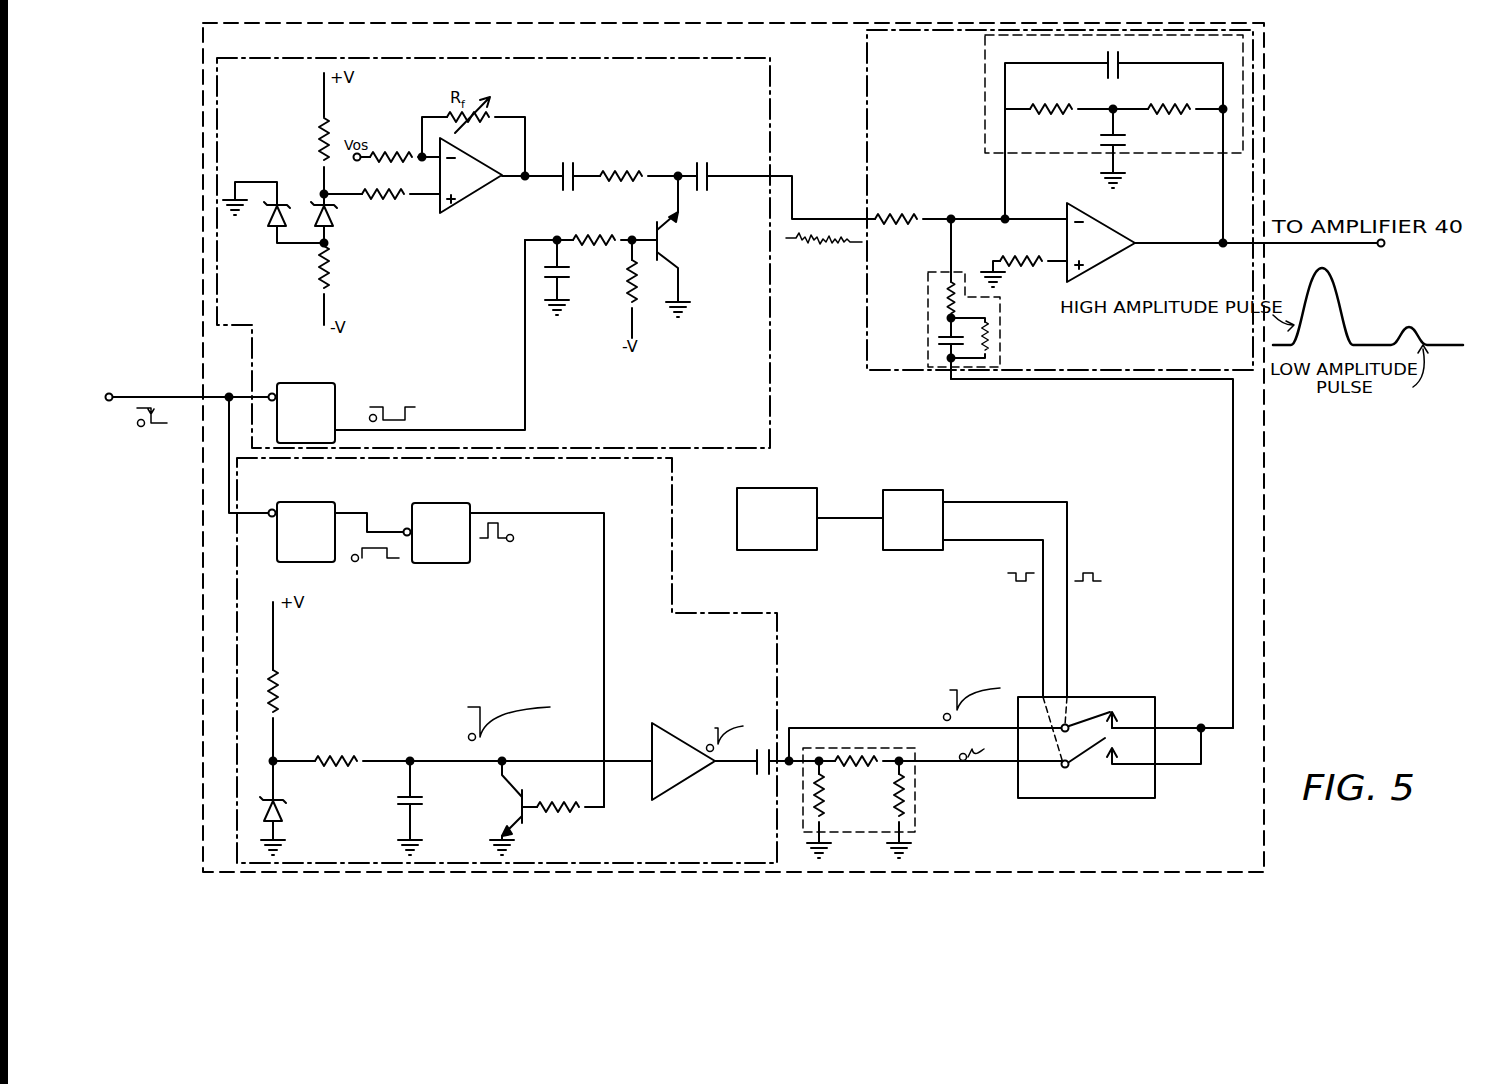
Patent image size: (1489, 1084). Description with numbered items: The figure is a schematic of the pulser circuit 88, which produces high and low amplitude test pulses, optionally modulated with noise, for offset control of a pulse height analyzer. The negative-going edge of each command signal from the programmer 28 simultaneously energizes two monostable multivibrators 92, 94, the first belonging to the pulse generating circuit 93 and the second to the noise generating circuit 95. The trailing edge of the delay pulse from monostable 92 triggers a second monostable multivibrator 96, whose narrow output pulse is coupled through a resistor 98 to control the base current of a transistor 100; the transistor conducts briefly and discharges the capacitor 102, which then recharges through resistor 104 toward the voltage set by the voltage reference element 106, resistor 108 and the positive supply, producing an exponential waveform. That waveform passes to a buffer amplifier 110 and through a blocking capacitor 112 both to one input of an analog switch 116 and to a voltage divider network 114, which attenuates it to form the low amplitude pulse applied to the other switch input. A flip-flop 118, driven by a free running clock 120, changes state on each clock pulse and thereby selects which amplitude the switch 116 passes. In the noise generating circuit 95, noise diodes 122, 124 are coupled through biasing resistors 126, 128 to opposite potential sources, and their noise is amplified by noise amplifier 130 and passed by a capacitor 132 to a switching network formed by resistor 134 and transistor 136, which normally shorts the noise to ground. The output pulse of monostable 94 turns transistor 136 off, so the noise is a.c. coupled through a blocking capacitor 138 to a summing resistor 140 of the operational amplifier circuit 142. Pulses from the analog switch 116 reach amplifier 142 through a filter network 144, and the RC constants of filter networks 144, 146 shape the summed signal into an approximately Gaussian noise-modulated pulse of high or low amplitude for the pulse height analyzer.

The pulser circuit 88 is at (203, 140).
The noise generating circuit 95 is at (771, 409).
The pulse generating circuit 93 is at (674, 599).
The programmer 28 is at (181, 377).
The monostable multivibrator 94 is at (324, 383).
The monostable multivibrator 92 is at (314, 502).
The second monostable multivibrator 96 is at (433, 503).
The biasing resistor 128 is at (318, 144).
The noise diode 124 is at (335, 218).
The biasing resistor 126 is at (332, 270).
The noise diode 122 is at (265, 223).
The noise amplifier 130 is at (460, 204).
The capacitor 132 is at (567, 160).
The resistor 134 is at (628, 173).
The blocking capacitor 138 is at (703, 159).
The transistor 136 is at (670, 242).
The summing resistor 140 is at (905, 215).
The filter network 144 is at (928, 333).
The operational amplifier circuit 142 is at (923, 374).
The filter network 146 is at (985, 104).
The free running clock 120 is at (778, 488).
The flip-flop 118 is at (918, 490).
The resistor 108 is at (278, 681).
The voltage reference element 106 is at (285, 810).
The resistor 104 is at (336, 757).
The capacitor 102 is at (426, 800).
The transistor 100 is at (512, 808).
The resistor 98 is at (560, 810).
The buffer amplifier 110 is at (665, 790).
The blocking capacitor 112 is at (748, 778).
The voltage divider network 114 is at (915, 808).
The analog switch 116 is at (1118, 697).